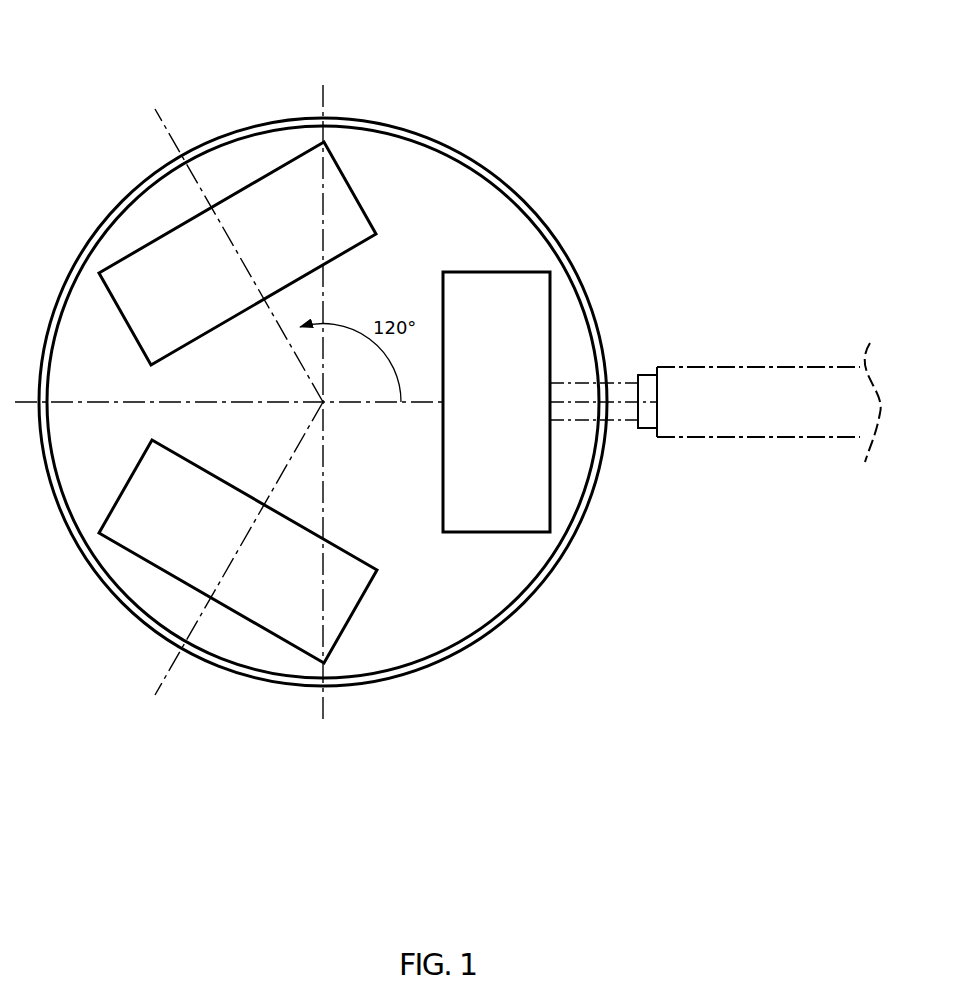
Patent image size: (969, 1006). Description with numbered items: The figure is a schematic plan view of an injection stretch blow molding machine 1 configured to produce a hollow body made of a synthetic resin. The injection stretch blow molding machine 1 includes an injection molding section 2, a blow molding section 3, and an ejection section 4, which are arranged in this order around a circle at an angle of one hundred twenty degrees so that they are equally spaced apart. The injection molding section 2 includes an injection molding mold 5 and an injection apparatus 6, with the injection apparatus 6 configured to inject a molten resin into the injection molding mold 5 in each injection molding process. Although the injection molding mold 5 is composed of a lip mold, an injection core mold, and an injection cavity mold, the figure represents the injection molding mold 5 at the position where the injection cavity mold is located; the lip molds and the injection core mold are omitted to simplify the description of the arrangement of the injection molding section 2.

The injection stretch blow molding machine 1 is at (505, 142).
The injection molding section 2 is at (495, 520).
The blow molding section 3 is at (268, 192).
The ejection section 4 is at (185, 563).
The injection molding mold 5 is at (551, 306).
The injection apparatus 6 is at (778, 365).